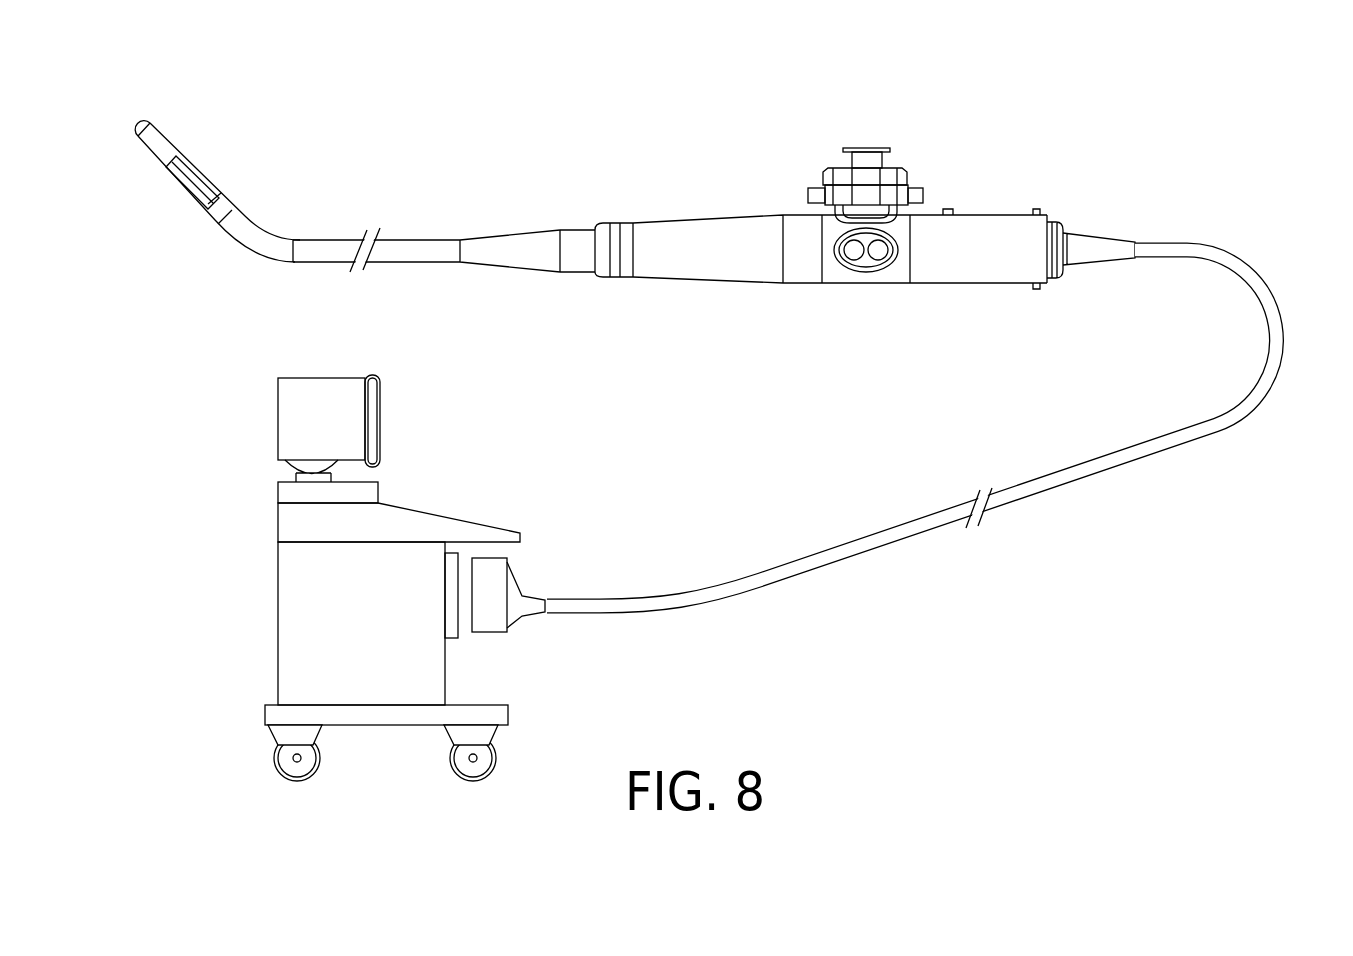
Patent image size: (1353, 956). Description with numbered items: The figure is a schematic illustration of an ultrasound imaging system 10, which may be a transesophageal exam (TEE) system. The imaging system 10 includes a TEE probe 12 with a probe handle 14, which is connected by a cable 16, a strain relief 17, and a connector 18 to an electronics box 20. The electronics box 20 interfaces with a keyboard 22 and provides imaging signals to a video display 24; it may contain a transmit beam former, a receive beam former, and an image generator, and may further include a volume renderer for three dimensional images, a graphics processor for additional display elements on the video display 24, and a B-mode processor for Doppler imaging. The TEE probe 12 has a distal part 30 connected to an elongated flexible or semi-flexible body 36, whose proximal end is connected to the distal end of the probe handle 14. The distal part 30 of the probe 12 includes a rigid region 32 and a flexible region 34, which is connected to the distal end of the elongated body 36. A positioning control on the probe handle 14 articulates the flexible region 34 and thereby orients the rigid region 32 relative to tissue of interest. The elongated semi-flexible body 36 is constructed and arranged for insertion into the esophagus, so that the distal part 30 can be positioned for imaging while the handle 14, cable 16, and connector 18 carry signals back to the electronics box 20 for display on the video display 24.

The imaging system 10 is at (1172, 553).
The TEE probe 12 is at (128, 92).
The probe handle 14 is at (665, 107).
The cable 16 is at (1070, 490).
The strain relief 17 is at (1065, 262).
The connector 18 is at (488, 635).
The electronics box 20 is at (277, 645).
The keyboard 22 is at (470, 517).
The video display 24 is at (382, 415).
The distal part 30 is at (120, 152).
The rigid region 32 is at (222, 193).
The flexible region 34 is at (255, 228).
The elongated body 36 is at (407, 263).